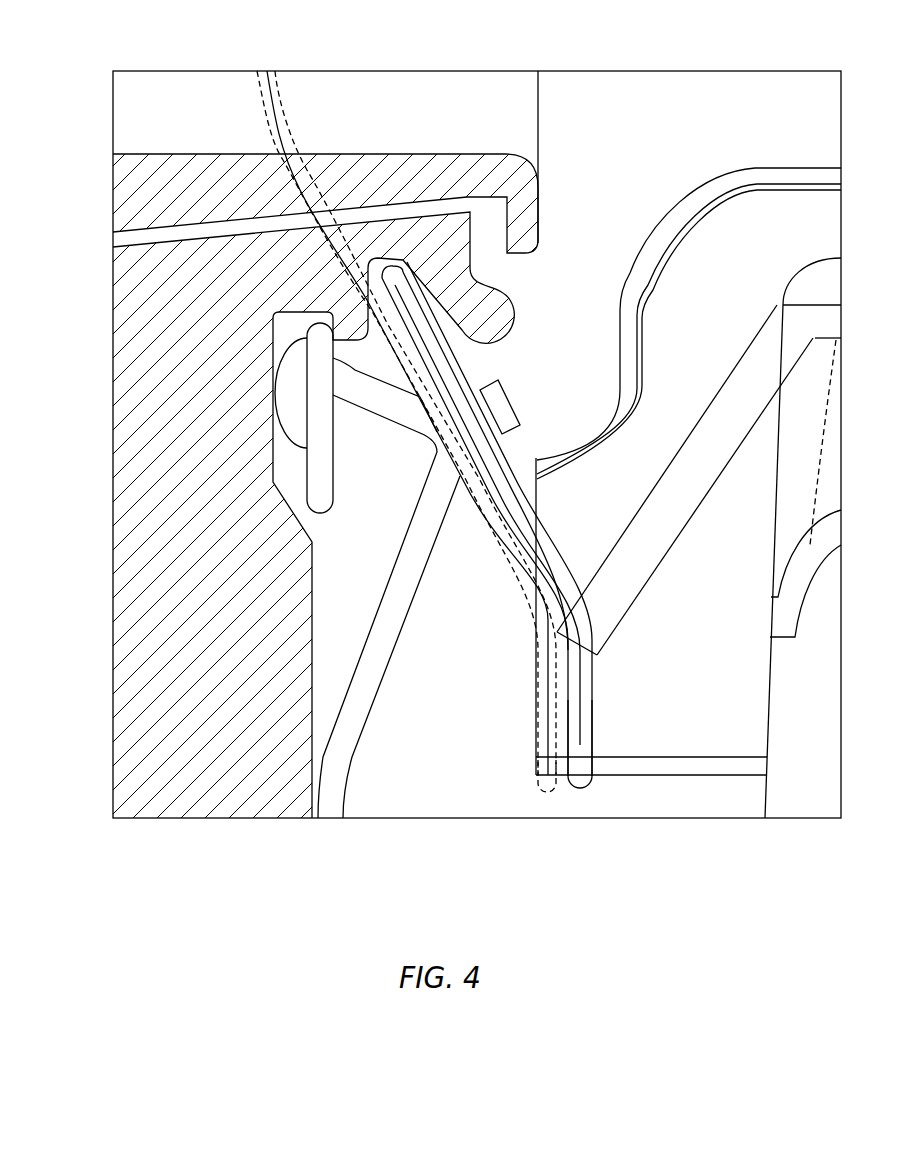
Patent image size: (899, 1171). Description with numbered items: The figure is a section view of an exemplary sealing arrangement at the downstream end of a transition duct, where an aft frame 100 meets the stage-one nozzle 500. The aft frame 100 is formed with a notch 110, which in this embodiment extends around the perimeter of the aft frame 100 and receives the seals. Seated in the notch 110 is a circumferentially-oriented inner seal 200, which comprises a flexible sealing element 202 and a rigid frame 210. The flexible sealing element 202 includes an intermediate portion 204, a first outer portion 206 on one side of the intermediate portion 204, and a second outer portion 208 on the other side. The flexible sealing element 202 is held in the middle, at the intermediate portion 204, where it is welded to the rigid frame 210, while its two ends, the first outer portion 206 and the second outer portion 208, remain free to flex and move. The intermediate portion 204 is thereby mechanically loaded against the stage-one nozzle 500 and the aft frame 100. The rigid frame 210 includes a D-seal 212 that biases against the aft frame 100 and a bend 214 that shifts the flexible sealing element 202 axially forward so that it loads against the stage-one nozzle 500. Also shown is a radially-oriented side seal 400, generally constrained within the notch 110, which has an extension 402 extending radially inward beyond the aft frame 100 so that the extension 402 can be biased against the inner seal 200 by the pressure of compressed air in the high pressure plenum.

The aft frame 100 is at (455, 100).
The notch 110 is at (290, 310).
The inner seal 200 is at (555, 569).
The flexible sealing element 202 is at (598, 710).
The intermediate portion 204 is at (493, 453).
The first outer portion 206 is at (463, 378).
The second outer portion 208 is at (560, 530).
The rigid frame 210 is at (387, 624).
The D-seal 212 is at (290, 355).
The bend 214 is at (376, 403).
The side seal 400 is at (290, 120).
The extension 402 is at (542, 795).
The stage-one nozzle 500 is at (732, 190).